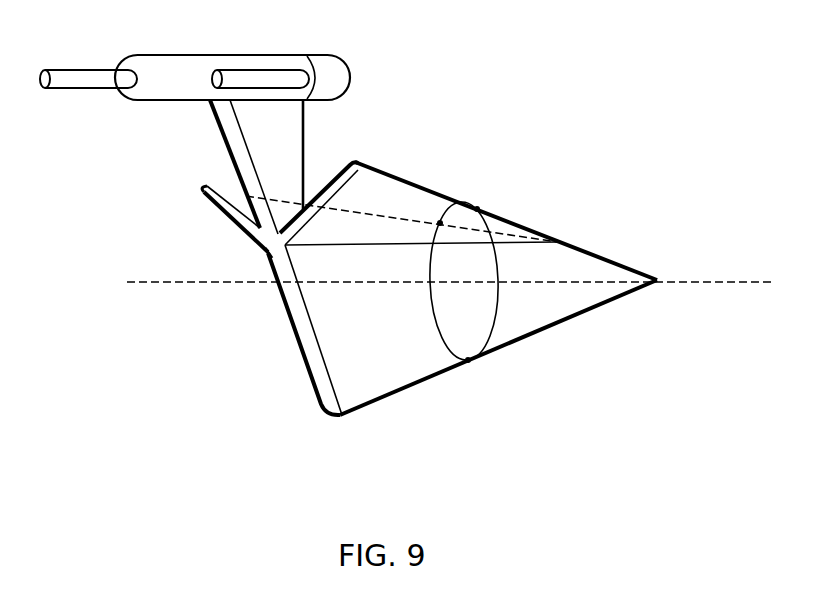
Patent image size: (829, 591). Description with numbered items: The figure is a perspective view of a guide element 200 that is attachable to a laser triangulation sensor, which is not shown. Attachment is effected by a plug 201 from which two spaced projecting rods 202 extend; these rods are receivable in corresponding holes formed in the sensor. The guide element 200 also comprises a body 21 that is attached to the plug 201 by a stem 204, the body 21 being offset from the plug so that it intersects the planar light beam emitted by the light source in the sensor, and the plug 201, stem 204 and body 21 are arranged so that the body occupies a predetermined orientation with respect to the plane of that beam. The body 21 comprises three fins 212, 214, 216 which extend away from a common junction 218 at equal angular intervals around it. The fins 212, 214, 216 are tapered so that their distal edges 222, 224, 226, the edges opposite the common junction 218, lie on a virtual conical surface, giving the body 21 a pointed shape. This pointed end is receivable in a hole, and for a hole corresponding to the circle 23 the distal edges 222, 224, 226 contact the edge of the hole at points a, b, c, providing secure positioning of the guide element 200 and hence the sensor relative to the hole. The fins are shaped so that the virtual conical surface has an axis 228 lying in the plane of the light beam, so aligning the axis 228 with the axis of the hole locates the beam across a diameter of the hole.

The guide element 200 is at (484, 95).
The plug 201 is at (165, 72).
The projecting rods 202 is at (68, 77).
The stem 204 is at (268, 143).
The body 21 is at (340, 330).
The fin 212 is at (365, 383).
The fin 214 is at (376, 188).
The fin 216 is at (238, 222).
The common junction 218 is at (268, 256).
The distal edge 222 is at (425, 383).
The distal edge 224 is at (440, 196).
The distal edge 226 is at (220, 180).
The axis 228 is at (727, 278).
The circle 23 is at (497, 260).
The contact point a is at (432, 212).
The contact point b is at (484, 200).
The contact point c is at (472, 373).